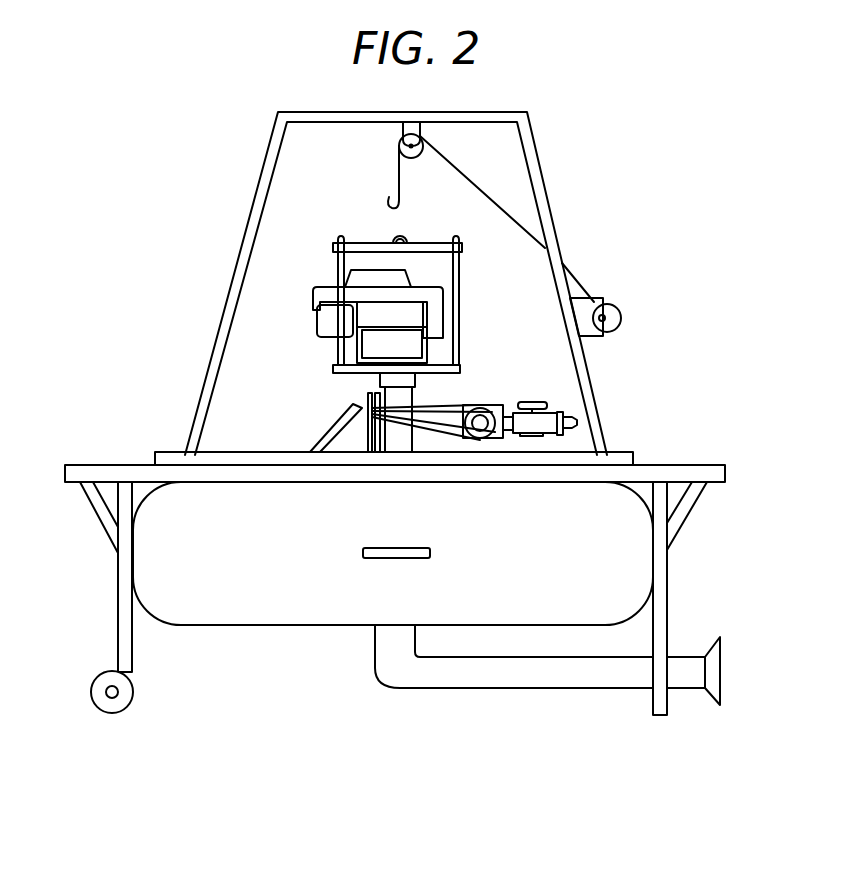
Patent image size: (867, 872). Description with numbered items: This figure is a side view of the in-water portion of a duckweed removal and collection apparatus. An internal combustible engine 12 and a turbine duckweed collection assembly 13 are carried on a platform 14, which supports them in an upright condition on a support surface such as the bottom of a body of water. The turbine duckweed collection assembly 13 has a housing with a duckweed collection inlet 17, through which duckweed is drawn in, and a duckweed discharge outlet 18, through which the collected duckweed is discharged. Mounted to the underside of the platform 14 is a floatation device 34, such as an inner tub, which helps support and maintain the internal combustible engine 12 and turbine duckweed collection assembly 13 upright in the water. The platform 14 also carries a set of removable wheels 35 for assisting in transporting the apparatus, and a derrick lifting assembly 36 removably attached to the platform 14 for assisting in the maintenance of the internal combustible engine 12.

The internal combustible engine 12 is at (317, 293).
The turbine duckweed collection assembly 13 is at (322, 415).
The platform 14 is at (65, 467).
The duckweed collection inlet 17 is at (721, 668).
The duckweed discharge outlet 18 is at (578, 425).
The floatation device 34 is at (305, 612).
The removable wheels 35 is at (118, 713).
The derrick lifting assembly 36 is at (553, 217).